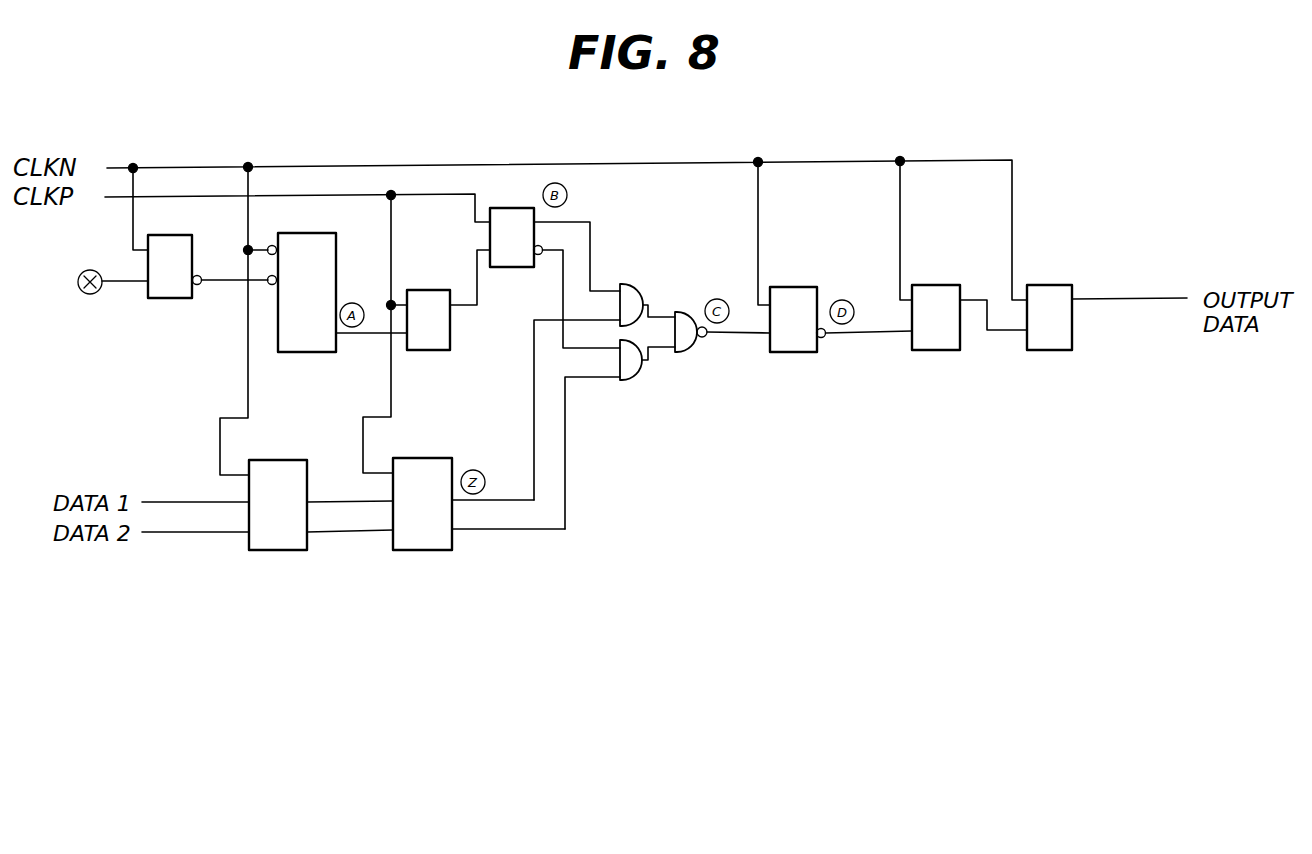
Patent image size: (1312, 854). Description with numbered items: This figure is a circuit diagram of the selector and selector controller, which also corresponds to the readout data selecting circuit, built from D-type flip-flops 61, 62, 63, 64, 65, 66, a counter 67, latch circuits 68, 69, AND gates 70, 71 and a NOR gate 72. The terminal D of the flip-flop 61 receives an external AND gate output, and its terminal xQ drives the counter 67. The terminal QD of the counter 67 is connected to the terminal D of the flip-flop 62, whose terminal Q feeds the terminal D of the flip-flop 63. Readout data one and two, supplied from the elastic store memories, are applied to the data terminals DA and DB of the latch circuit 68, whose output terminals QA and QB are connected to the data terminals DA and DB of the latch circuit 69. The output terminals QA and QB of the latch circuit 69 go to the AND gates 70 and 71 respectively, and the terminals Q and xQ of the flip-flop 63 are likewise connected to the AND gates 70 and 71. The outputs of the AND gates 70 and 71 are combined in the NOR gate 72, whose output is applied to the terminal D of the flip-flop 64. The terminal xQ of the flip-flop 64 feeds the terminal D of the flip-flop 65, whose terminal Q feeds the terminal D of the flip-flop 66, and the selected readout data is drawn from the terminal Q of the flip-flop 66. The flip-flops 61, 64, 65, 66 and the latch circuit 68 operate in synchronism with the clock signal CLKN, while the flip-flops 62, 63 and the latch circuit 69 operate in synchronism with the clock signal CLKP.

The D-type flip-flop 61 is at (184, 236).
The D-type flip-flop 62 is at (425, 290).
The D-type flip-flop 63 is at (513, 196).
The D-type flip-flop 64 is at (790, 287).
The D-type flip-flop 65 is at (948, 285).
The D-type flip-flop 66 is at (1063, 285).
The counter 67 is at (318, 233).
The latch circuit 68 is at (283, 460).
The latch circuit 69 is at (427, 458).
The AND gate 70 is at (637, 284).
The AND gate 71 is at (628, 382).
The NOR gate 72 is at (690, 348).